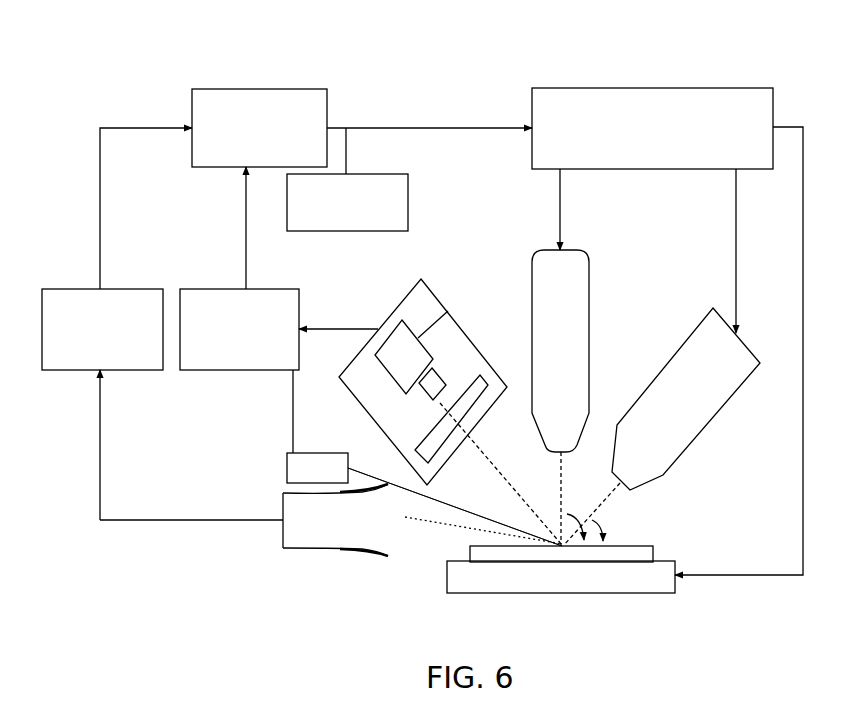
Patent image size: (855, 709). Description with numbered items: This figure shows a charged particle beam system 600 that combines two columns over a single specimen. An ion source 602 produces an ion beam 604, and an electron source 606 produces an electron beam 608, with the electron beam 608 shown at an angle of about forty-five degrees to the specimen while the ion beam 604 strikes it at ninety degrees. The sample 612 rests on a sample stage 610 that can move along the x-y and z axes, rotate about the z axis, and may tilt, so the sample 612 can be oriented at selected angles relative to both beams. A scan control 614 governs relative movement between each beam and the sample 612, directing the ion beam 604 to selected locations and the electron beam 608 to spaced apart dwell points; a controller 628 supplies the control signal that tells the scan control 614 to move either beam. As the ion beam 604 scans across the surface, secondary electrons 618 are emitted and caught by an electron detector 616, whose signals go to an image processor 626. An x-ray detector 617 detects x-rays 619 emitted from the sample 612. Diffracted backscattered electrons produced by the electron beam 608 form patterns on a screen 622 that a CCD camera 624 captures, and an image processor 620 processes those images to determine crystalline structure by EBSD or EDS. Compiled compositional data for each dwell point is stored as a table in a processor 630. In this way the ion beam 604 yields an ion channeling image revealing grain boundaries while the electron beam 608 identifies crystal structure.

The charged particle beam system 600 is at (126, 50).
The ion source 602 is at (591, 314).
The ion beam 604 is at (558, 487).
The electron source 606 is at (648, 382).
The electron beam 608 is at (614, 493).
The sample stage 610 is at (676, 569).
The sample 612 is at (658, 552).
The scan control 614 is at (643, 88).
The electron detector 616 is at (283, 498).
The x-ray detector 617 is at (300, 453).
The secondary electrons 618 is at (473, 522).
The x-rays 619 is at (430, 500).
The image processor 620 is at (212, 289).
The screen 622 is at (396, 457).
The CCD camera 624 is at (448, 311).
The image processor 626 is at (69, 289).
The controller 628 is at (247, 88).
The processor 630 is at (408, 209).